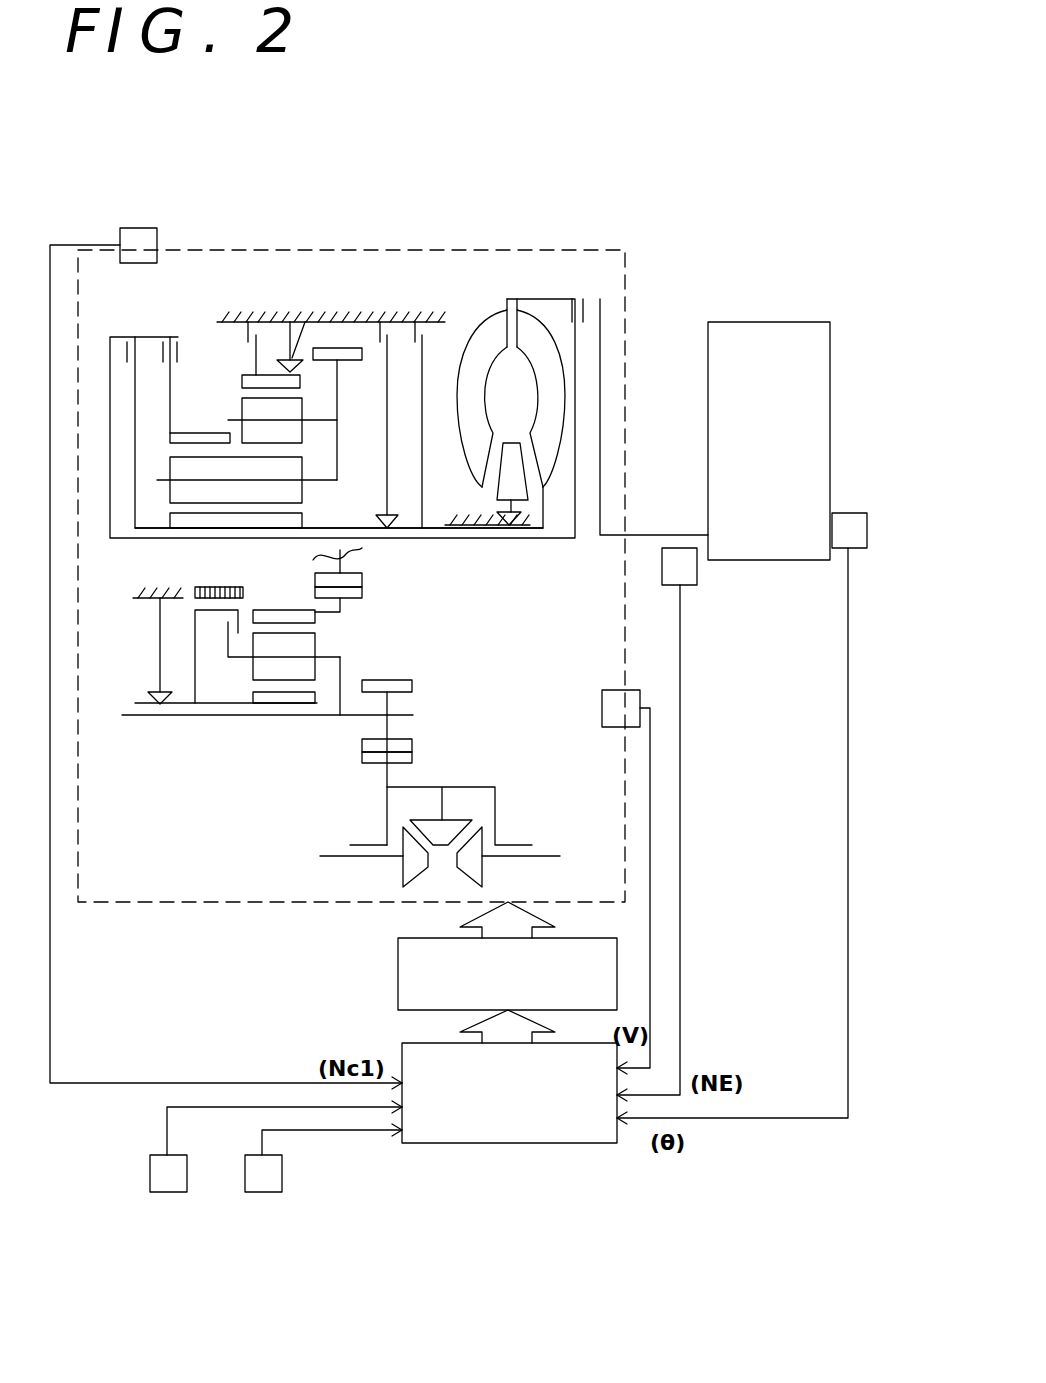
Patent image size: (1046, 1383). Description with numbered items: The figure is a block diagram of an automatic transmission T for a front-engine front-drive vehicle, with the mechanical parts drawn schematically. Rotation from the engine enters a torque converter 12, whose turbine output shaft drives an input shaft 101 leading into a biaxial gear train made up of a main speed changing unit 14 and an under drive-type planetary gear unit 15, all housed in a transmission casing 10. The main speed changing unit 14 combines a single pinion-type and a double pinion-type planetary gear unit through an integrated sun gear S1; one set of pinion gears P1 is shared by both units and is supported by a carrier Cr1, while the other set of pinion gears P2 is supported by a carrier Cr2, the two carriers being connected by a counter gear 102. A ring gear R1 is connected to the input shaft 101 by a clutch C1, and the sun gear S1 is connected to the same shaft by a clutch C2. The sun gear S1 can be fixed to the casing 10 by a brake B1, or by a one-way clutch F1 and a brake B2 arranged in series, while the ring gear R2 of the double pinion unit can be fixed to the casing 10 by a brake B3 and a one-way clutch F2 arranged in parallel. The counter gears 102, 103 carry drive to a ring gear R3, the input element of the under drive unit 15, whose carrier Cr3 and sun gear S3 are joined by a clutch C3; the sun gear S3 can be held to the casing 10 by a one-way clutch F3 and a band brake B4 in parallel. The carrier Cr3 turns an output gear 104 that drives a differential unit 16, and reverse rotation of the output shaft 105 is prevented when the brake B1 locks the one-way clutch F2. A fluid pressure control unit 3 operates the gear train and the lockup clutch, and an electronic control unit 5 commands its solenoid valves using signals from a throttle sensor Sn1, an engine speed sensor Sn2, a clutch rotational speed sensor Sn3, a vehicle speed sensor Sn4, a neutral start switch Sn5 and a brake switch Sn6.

The automatic transmission T is at (390, 246).
The transmission casing 10 is at (335, 312).
The main speed changing unit 14 is at (248, 270).
The clutch C2 is at (120, 318).
The clutch C1 is at (176, 320).
The brake B3 is at (248, 322).
The one-way clutch F2 is at (305, 322).
The brake B2 is at (380, 322).
The brake B1 is at (422, 322).
The one-way clutch F1 is at (383, 515).
The ring gear R2 is at (250, 372).
The pinion gears P2 is at (242, 402).
The ring gear R1 is at (228, 420).
The carrier Cr2 is at (342, 406).
The carrier Cr1 is at (342, 461).
The pinion gears P1 is at (310, 492).
The sun gear S1 is at (252, 538).
The input shaft 101 is at (432, 538).
The torque converter 12 is at (507, 299).
The under drive-type planetary gear unit 15 is at (268, 758).
The one-way clutch F3 is at (150, 697).
The band brake B4 is at (238, 588).
The clutch C3 is at (228, 636).
The ring gear R3 is at (286, 612).
The carrier Cr3 is at (340, 655).
The sun gear S3 is at (300, 705).
The counter gear 102 is at (362, 580).
The counter gear 103 is at (362, 594).
The output gear 104 is at (412, 683).
The output shaft 105 is at (218, 717).
The differential unit 16 is at (492, 786).
The clutch C1 rotational speed sensor Sn3 is at (140, 228).
The throttle sensor Sn1 is at (850, 513).
The engine speed sensor Sn2 is at (682, 586).
The vehicle speed sensor Sn4 is at (613, 690).
The neutral start switch Sn5 is at (150, 1168).
The brake switch Sn6 is at (282, 1170).
The fluid pressure control unit 3 is at (398, 987).
The electronic control unit 5 is at (530, 1144).